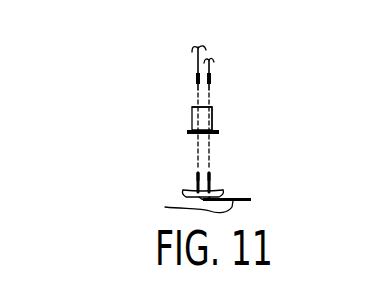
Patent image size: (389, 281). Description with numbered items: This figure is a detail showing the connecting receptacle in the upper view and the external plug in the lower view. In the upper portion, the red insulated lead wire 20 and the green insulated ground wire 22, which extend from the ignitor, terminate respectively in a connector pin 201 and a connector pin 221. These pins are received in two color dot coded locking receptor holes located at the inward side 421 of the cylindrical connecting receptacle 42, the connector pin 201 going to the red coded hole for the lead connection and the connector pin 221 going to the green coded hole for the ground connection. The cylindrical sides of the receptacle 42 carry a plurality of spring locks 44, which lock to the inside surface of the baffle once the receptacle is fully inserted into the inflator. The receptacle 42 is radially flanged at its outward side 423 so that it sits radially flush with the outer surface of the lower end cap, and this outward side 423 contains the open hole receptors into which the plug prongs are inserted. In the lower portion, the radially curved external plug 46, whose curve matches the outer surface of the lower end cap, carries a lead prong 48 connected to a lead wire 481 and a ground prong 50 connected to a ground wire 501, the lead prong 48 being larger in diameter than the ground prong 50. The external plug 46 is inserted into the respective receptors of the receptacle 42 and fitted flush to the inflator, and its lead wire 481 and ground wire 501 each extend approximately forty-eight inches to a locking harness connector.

The red insulated lead wire 20 is at (197, 56).
The green insulated ground wire 22 is at (209, 70).
The connector pin 201 is at (159, 104).
The connector pin 221 is at (258, 105).
The spring locks 44 is at (188, 113).
The connecting receptacle 42 is at (177, 118).
The inward side 421 is at (290, 98).
The outward side 423 is at (236, 118).
The lead prong 48 is at (183, 189).
The external plug 46 is at (172, 196).
The lead wire 481 is at (147, 206).
The ground prong 50 is at (214, 184).
The ground wire 501 is at (272, 187).